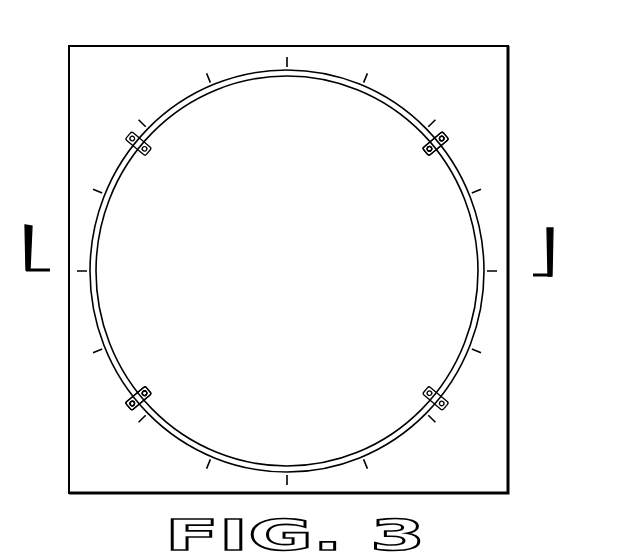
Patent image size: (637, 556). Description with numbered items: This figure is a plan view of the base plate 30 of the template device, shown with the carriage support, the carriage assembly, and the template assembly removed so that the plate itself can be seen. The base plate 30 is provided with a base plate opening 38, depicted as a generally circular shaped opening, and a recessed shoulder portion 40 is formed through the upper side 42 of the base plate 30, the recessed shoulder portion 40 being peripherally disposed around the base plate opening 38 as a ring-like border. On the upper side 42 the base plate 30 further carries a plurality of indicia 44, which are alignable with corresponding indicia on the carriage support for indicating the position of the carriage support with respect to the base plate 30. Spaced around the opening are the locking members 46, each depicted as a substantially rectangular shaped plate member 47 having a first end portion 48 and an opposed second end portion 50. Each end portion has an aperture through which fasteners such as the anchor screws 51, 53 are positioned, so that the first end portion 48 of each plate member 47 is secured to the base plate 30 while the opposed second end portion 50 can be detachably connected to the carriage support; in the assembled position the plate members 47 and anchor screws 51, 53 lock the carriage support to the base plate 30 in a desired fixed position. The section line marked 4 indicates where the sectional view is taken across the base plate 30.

The base plate 30 is at (514, 78).
The base plate opening 38 is at (440, 228).
The recessed shoulder portion 40 is at (478, 327).
The upper side 42 is at (488, 438).
The indicia 44 is at (292, 60).
The locking members 46 is at (441, 129).
The plate members 47 is at (443, 147).
The first end portion 48 is at (445, 137).
The second end portion 50 is at (430, 149).
The anchor screw 51 is at (448, 141).
The anchor screw 53 is at (430, 153).
The section line 4- 4 is at (289, 239).